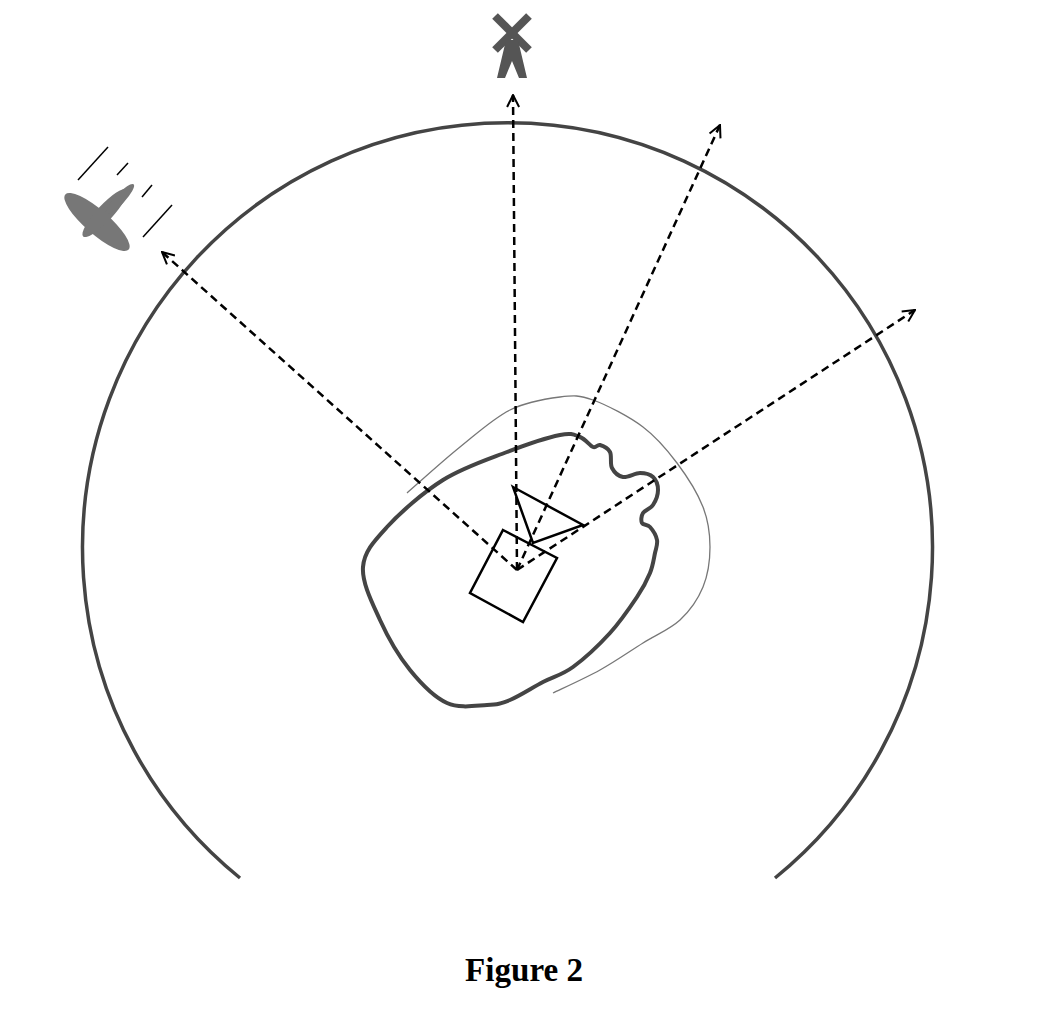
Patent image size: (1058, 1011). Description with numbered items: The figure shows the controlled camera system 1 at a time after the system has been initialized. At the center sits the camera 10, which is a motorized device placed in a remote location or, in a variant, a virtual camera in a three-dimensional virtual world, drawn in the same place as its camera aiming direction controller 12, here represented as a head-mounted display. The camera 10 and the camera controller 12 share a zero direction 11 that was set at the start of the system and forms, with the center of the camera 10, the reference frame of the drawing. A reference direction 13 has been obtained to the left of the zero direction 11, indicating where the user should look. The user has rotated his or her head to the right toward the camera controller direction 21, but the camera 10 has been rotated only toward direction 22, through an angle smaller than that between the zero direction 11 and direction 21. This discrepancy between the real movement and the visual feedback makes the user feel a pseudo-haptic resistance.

The controlled camera system 1 is at (838, 174).
The camera 10 is at (470, 582).
The zero direction 11 is at (513, 260).
The camera aiming direction controller 12 is at (662, 632).
The reference direction 13 is at (288, 368).
The camera controller direction 21 is at (780, 400).
The camera aiming direction 22 is at (645, 295).